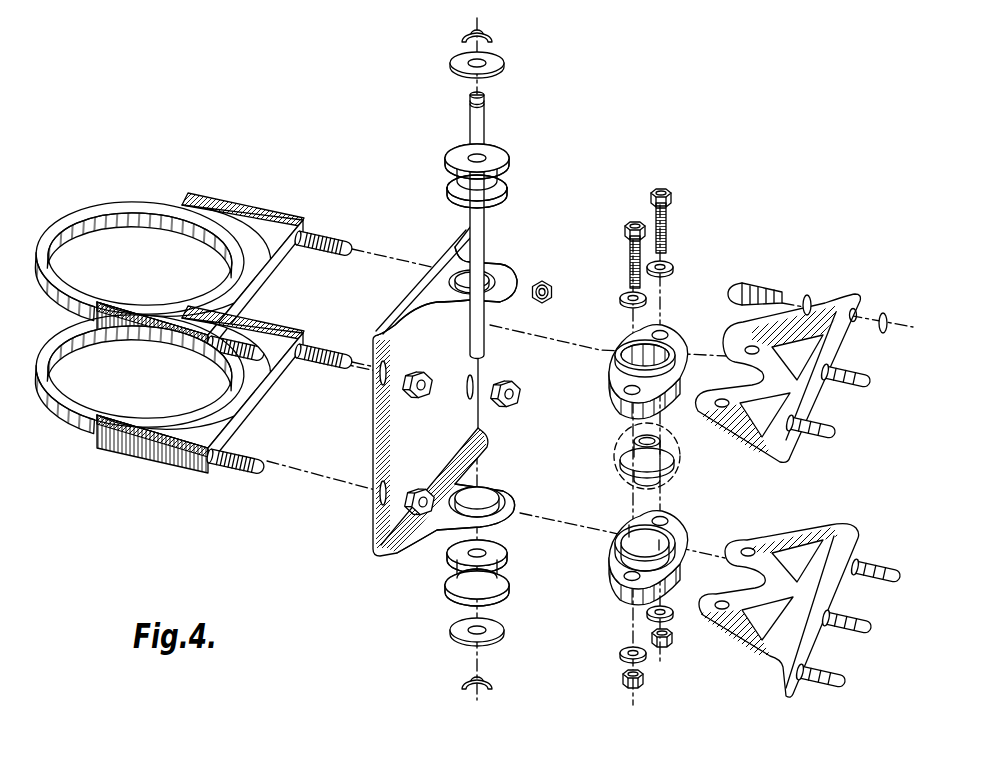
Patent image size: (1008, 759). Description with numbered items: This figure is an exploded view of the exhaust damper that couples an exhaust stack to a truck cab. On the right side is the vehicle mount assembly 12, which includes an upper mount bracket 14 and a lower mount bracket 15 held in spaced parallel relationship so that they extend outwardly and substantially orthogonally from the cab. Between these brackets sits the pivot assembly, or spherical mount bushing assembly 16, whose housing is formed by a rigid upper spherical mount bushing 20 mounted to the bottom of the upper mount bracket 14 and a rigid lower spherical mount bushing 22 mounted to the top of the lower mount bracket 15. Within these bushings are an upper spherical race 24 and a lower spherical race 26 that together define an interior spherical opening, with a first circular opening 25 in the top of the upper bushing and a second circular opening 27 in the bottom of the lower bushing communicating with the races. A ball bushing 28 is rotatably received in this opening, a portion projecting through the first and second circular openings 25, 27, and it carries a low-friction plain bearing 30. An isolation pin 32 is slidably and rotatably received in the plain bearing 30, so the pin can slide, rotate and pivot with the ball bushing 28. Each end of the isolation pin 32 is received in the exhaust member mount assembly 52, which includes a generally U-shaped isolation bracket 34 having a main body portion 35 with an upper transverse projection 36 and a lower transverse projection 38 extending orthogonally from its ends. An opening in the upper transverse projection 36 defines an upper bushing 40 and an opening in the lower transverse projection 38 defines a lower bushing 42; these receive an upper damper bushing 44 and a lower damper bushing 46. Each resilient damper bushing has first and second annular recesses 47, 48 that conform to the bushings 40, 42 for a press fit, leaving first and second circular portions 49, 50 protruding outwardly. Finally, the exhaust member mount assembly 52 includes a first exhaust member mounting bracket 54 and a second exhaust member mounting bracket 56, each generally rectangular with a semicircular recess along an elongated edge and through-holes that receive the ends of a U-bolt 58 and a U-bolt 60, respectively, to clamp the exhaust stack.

The vehicle mount assembly 12 is at (799, 450).
The upper mount bracket 14 is at (821, 327).
The lower mount bracket 15 is at (827, 528).
The spherical mount bushing assembly 16 is at (687, 438).
The upper spherical mount bushing 20 is at (652, 351).
The lower spherical mount bushing 22 is at (661, 549).
The upper spherical race 24 is at (630, 343).
The first circular opening 25 is at (659, 355).
The lower spherical race 26 is at (628, 530).
The second circular opening 27 is at (653, 537).
The ball bushing 28 is at (673, 476).
The plain bearing 30 is at (650, 455).
The isolation pin 32 is at (487, 122).
The isolation bracket 34 is at (423, 389).
The main body portion 35 is at (377, 432).
The upper transverse projection 36 is at (511, 277).
The lower transverse projection 38 is at (514, 493).
The upper bushing 40 is at (492, 272).
The lower bushing 42 is at (488, 483).
The upper damper bushing 44 is at (510, 175).
The lower damper bushing 46 is at (451, 602).
The first annular recess 47 is at (484, 191).
The second annular recess 48 is at (498, 583).
The first circular portion 49 is at (458, 157).
The second circular portion 50 is at (457, 199).
The exhaust member mount assembly 52 is at (246, 514).
The first exhaust member mounting bracket 54 is at (264, 216).
The second exhaust member mounting bracket 56 is at (163, 411).
The U-bolt 58 is at (115, 216).
The U-bolt 60 is at (60, 414).